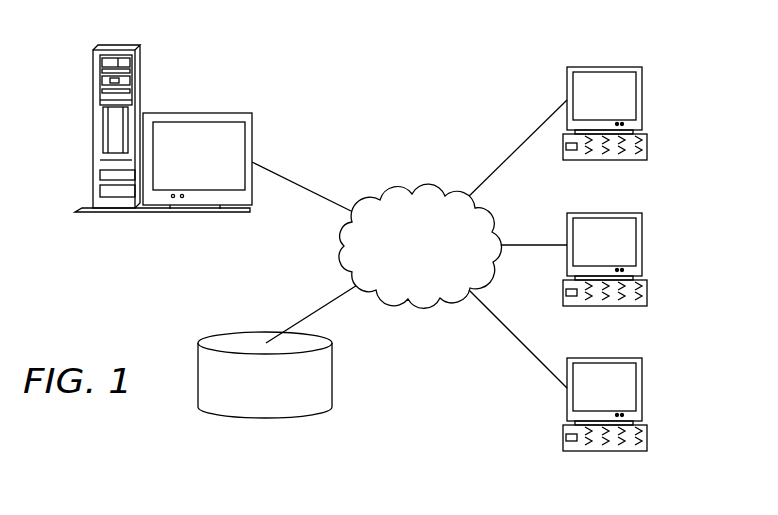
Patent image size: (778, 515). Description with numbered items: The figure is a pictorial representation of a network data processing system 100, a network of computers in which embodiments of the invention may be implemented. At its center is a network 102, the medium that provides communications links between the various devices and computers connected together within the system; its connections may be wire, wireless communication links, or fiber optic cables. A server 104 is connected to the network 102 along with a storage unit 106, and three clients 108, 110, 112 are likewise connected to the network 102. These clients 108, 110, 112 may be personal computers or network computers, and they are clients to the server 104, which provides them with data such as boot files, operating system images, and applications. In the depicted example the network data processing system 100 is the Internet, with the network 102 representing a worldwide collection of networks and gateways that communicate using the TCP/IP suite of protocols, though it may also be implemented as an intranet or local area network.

The network data processing system 100 is at (468, 82).
The network 102 is at (388, 196).
The server 104 is at (93, 130).
The storage unit 106 is at (248, 418).
The client 108 is at (642, 97).
The client 110 is at (642, 245).
The client 112 is at (642, 390).